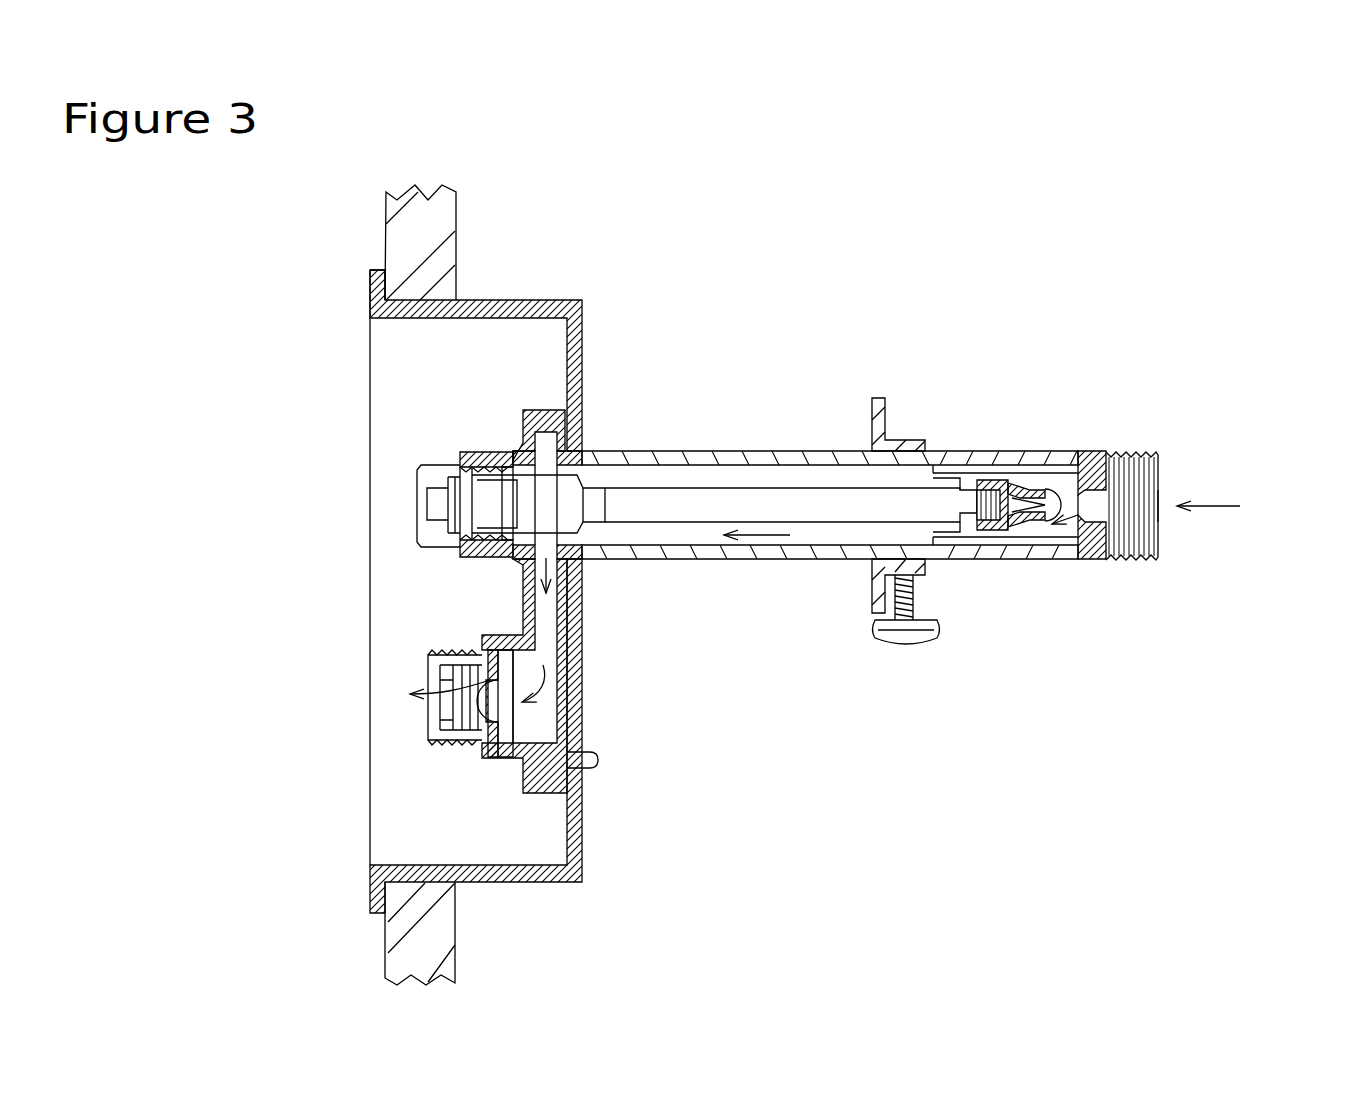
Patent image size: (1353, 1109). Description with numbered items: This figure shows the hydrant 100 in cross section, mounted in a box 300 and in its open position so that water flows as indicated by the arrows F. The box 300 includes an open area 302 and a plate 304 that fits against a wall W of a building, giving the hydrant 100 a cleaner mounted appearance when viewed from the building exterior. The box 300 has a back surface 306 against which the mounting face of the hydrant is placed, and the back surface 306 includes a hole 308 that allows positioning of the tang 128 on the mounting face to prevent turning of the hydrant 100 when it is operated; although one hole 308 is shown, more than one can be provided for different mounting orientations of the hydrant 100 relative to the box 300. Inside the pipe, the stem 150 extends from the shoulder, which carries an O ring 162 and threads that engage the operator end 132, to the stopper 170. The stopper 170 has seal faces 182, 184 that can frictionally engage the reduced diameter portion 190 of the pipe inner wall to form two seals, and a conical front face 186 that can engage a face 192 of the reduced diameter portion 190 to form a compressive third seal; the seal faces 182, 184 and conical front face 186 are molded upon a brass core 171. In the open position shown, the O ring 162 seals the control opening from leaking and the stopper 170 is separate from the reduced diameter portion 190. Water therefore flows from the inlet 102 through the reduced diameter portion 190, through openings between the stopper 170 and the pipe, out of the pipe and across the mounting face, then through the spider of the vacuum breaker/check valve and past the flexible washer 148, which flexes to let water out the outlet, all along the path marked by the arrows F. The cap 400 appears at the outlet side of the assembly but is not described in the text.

The wall W is at (440, 210).
The hydrant 100 is at (730, 403).
The inlet 102 is at (1165, 530).
The tang 128 is at (582, 762).
The operator end 132 is at (432, 505).
The flexible washer 148 is at (482, 760).
The stem 150 is at (682, 503).
The O ring 162 is at (503, 557).
The stopper 170 is at (985, 480).
The brass core 171 is at (1000, 480).
The seal face 182 is at (1045, 528).
The seal face 184 is at (1030, 528).
The conical front face 186 is at (1040, 480).
The reduced diameter portion 190 is at (1093, 455).
The face 192 is at (1082, 455).
The box 300 is at (487, 300).
The open area 302 is at (465, 365).
The plate 304 is at (370, 293).
The back surface 306 is at (567, 405).
The hole 308 is at (572, 745).
The outlet cap 400 is at (432, 710).
The arrows F is at (1240, 490).